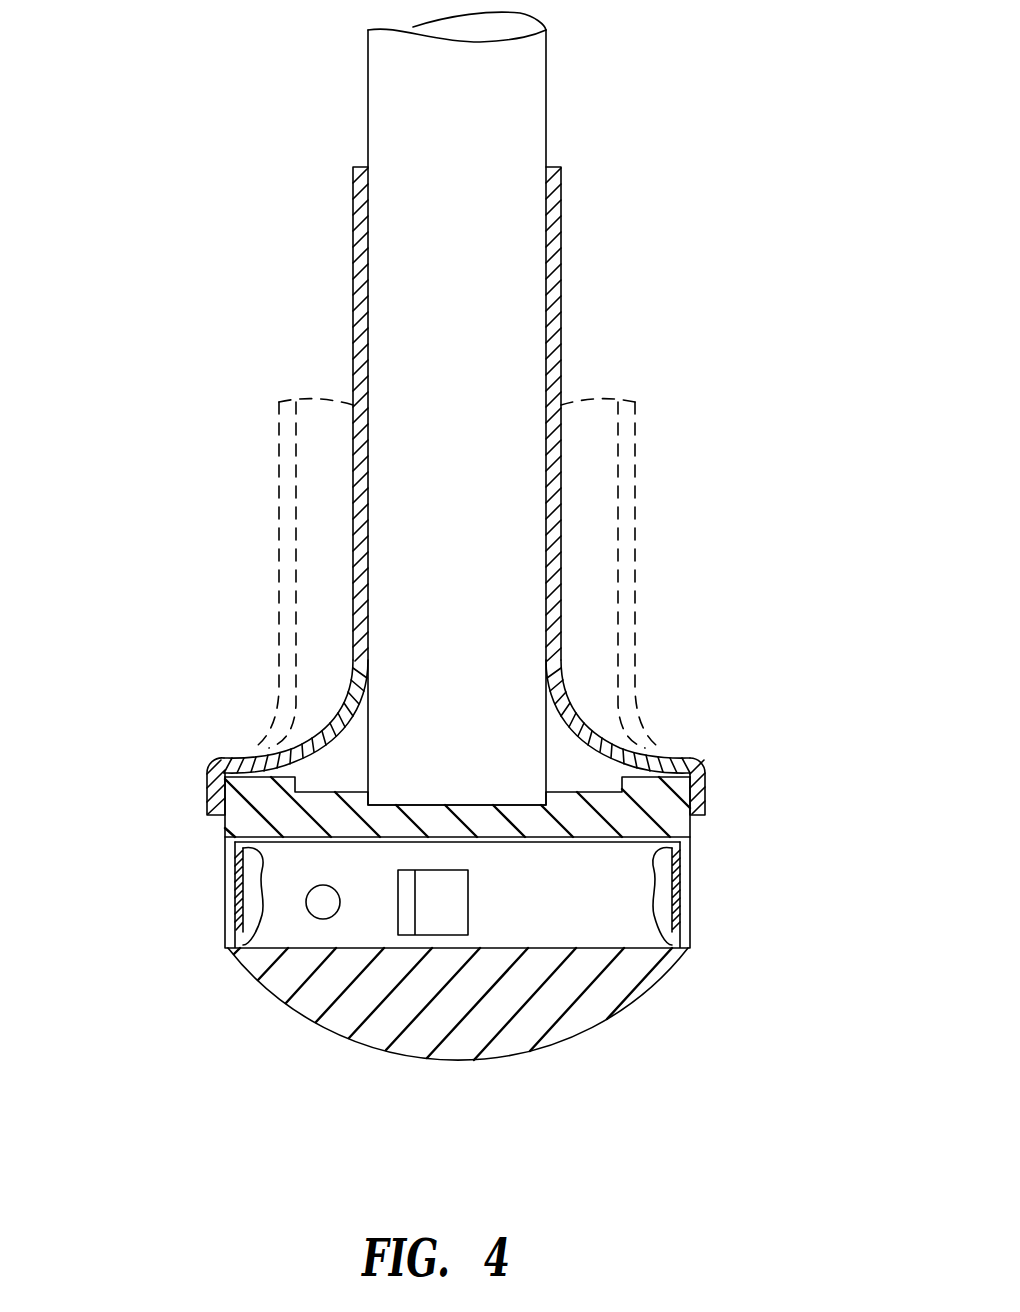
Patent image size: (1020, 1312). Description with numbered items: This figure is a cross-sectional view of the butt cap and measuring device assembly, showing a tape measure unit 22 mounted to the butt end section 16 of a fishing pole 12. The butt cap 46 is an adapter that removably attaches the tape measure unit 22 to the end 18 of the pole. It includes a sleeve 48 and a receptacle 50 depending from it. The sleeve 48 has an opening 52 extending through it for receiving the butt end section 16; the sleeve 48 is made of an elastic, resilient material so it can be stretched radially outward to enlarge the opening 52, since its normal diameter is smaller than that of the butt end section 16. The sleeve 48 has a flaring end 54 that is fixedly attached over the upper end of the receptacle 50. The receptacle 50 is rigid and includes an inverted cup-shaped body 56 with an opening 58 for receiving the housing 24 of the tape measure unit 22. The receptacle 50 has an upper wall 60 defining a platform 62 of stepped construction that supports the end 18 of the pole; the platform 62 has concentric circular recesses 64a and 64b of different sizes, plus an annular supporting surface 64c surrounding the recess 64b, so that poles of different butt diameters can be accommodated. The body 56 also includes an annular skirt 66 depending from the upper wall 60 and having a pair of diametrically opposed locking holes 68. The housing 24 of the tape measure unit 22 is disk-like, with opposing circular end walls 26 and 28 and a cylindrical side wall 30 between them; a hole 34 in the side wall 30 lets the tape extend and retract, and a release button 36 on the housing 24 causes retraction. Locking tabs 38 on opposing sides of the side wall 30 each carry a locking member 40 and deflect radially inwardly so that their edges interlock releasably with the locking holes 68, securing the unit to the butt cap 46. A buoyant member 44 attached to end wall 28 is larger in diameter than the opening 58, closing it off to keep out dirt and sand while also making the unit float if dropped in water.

The fishing pole 12 is at (575, 50).
The butt end section 16 is at (408, 377).
The end 18 is at (517, 763).
The tape measure unit 22 is at (535, 1072).
The housing 24 is at (304, 950).
The end wall 26 is at (695, 790).
The end wall 28 is at (628, 953).
The side wall 30 is at (500, 948).
The hole 34 is at (408, 948).
The release button 36 is at (328, 887).
The locking tabs 38 is at (262, 955).
The locking member 40 is at (222, 896).
The buoyant member 44 is at (504, 1035).
The butt cap 46 is at (203, 740).
The sleeve 48 is at (463, 491).
The receptacle 50 is at (205, 920).
The opening 52 is at (532, 508).
The flaring end 54 is at (597, 705).
The body 56 is at (712, 847).
The opening 58 is at (668, 952).
The upper wall 60 is at (225, 793).
The platform 62 is at (568, 800).
The recess 64a is at (440, 812).
The recess 64b is at (330, 808).
The supporting surface 64c is at (662, 757).
The annular skirt 66 is at (222, 935).
The locking holes 68 is at (228, 873).